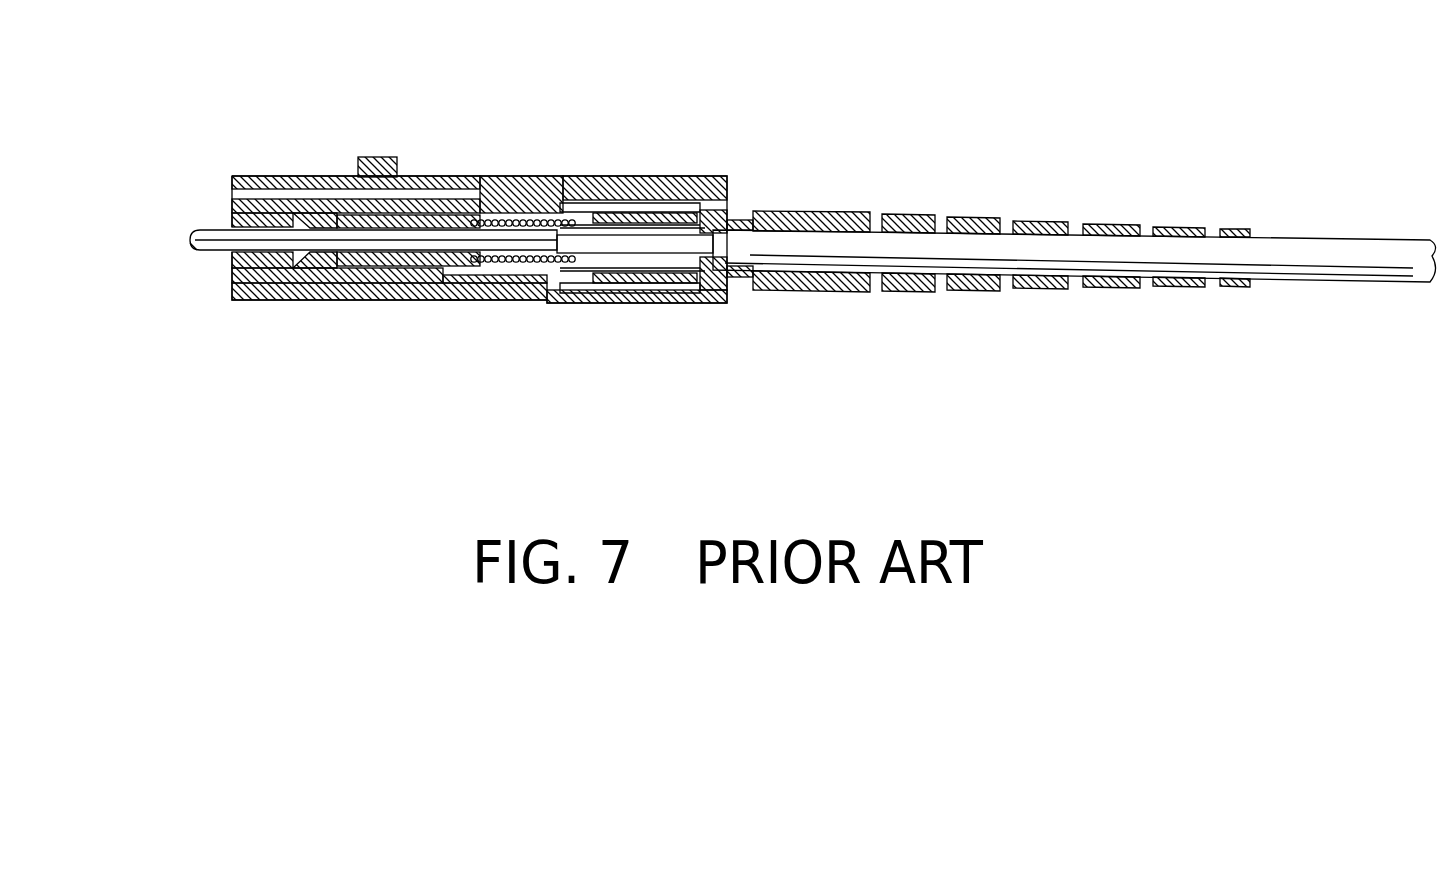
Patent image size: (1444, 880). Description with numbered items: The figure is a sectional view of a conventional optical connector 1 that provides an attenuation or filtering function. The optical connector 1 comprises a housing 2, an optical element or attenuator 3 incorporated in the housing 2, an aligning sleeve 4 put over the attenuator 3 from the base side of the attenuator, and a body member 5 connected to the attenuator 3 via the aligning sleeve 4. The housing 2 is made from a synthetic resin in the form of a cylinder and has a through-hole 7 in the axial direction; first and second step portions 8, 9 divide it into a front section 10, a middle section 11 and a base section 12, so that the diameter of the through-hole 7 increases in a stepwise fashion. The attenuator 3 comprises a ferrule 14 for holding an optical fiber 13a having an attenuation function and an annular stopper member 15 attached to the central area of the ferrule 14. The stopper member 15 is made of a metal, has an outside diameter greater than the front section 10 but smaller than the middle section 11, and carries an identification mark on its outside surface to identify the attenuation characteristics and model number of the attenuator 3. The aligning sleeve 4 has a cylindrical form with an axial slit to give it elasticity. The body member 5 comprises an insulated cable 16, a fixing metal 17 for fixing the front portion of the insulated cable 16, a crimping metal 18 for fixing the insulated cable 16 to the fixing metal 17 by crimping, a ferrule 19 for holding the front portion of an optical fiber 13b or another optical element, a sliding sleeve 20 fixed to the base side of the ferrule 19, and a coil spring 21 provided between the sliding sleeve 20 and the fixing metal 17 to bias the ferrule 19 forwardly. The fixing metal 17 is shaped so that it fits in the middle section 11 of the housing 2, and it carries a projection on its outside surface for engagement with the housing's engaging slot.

The optical connector 1 is at (705, 147).
The housing 2 is at (527, 170).
The attenuator 3 is at (180, 227).
The aligning sleeve 4 is at (412, 212).
The body member 5 is at (854, 202).
The through-hole 7 is at (735, 210).
The first step portion 8 is at (305, 300).
The second step portion 9 is at (560, 300).
The front section 10 is at (248, 300).
The middle section 11 is at (387, 300).
The base section 12 is at (692, 300).
The optical fiber 13a is at (190, 243).
The optical fiber 13b is at (450, 298).
The ferrule 14 is at (205, 228).
The stopper member 15 is at (327, 176).
The insulated cable 16 is at (1328, 252).
The fixing metal 17 is at (565, 200).
The crimping metal 18 is at (638, 212).
The ferrule 19 is at (482, 178).
The sliding sleeve 20 is at (618, 300).
The coil spring 21 is at (520, 300).